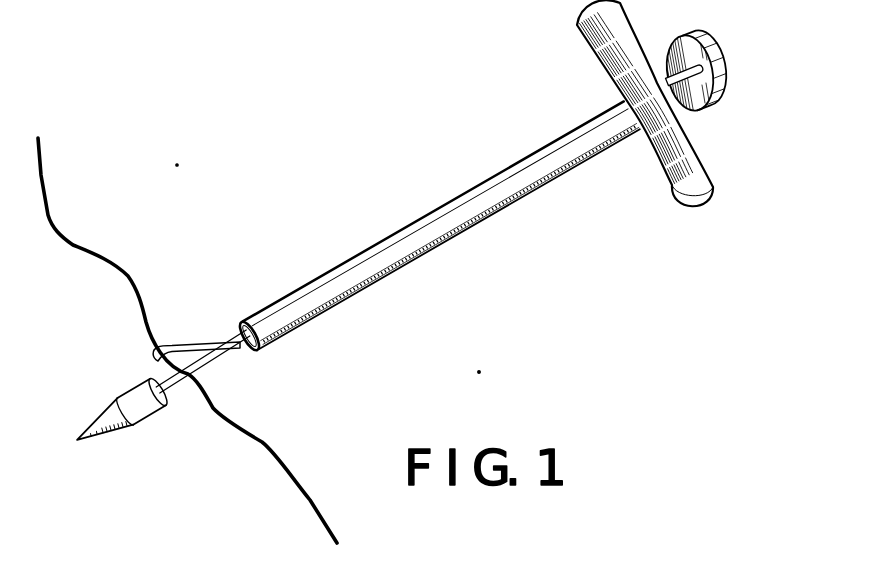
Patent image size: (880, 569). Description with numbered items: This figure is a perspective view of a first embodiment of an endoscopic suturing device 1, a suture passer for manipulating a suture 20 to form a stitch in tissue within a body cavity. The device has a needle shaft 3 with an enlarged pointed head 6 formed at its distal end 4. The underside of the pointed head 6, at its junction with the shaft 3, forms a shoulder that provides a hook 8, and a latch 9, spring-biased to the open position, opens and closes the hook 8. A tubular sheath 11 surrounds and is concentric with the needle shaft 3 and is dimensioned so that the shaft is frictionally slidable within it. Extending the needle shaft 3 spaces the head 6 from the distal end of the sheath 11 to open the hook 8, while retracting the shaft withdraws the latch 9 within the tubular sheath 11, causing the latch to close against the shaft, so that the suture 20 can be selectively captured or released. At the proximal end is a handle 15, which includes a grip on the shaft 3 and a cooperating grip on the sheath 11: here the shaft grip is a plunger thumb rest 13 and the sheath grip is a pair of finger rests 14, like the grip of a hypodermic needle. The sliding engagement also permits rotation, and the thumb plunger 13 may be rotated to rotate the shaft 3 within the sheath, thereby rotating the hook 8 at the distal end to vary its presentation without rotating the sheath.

The endoscopic suturing device 1 is at (492, 173).
The needle shaft 3 is at (223, 351).
The distal end 4 is at (172, 386).
The pointed head 6 is at (148, 414).
The hook 8 is at (157, 380).
The latch 9 is at (175, 344).
The tubular sheath 11 is at (380, 257).
The plunger thumb rest 13 is at (723, 62).
The finger rests 14 is at (675, 186).
The handle 15 is at (727, 84).
The suture 20 is at (62, 236).